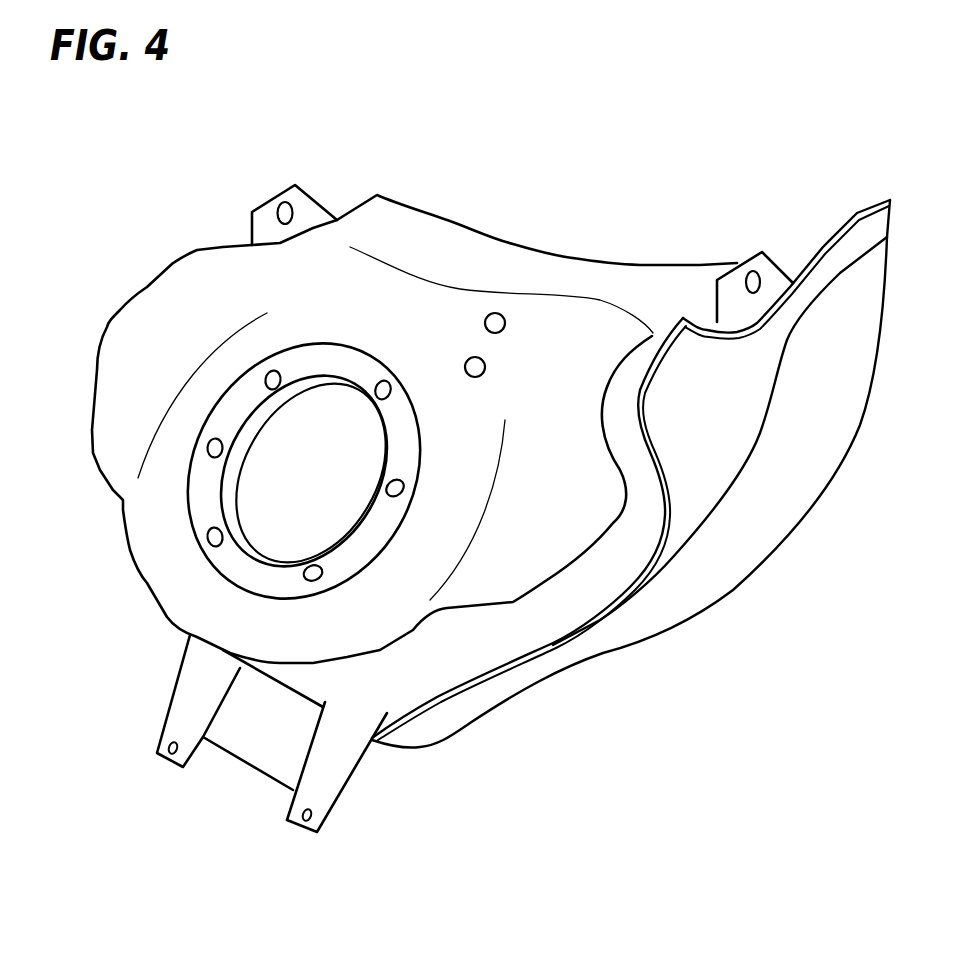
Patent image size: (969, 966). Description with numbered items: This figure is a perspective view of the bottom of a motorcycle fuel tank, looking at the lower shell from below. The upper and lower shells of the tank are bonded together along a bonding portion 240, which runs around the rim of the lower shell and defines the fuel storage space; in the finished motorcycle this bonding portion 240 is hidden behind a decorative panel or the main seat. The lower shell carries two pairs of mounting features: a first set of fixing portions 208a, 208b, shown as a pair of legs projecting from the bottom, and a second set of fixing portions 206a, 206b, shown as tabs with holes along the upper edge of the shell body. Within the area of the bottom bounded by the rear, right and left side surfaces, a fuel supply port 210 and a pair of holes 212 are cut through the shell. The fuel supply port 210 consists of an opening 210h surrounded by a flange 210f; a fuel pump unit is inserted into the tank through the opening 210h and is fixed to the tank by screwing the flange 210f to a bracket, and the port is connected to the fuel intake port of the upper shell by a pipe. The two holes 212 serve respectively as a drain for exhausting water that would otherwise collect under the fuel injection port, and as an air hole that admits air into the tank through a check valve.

The second set of fixing portions 206a is at (277, 197).
The second set of fixing portions 206b is at (780, 280).
The first set of fixing portions 208a is at (160, 757).
The first set of fixing portions 208b is at (300, 826).
The fuel supply port 210 is at (120, 670).
The opening 210h is at (283, 485).
The flange 210f is at (223, 562).
The holes 212 is at (473, 368).
The bonding portion 240 is at (553, 643).